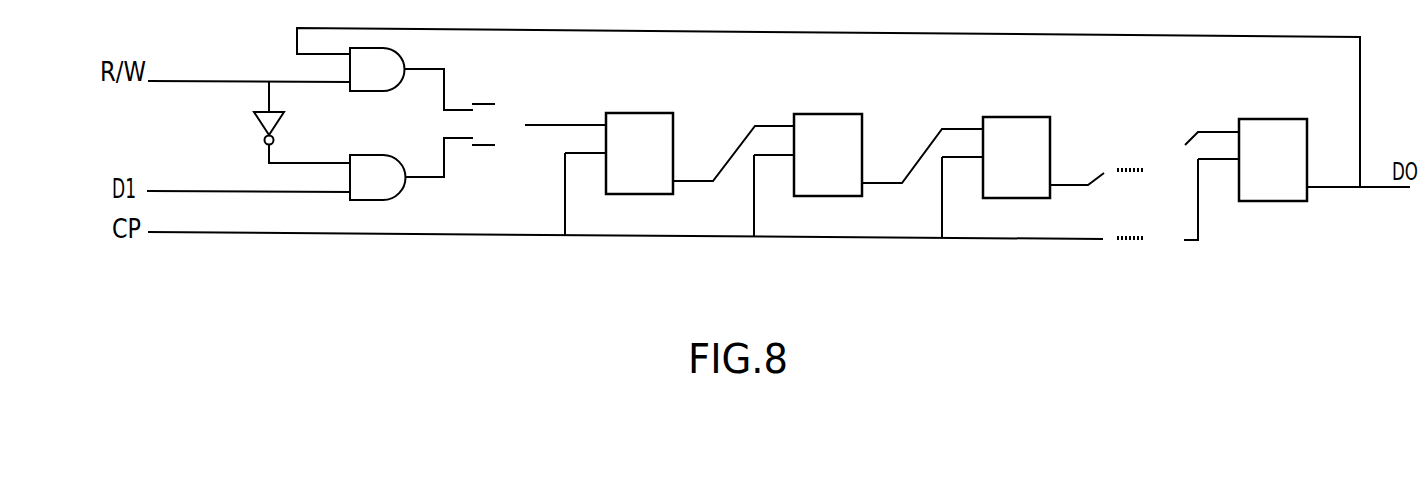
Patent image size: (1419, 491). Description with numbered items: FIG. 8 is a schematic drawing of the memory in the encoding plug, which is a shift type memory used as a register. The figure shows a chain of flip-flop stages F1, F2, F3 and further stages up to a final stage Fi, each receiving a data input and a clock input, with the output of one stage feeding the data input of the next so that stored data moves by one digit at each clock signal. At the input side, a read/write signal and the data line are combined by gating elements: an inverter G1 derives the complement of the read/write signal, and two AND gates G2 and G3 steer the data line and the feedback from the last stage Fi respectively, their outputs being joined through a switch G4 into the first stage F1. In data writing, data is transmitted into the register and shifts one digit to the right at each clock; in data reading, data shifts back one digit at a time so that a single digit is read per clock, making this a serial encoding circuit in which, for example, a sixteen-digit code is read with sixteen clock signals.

The inverter G1 is at (302, 122).
The AND gate G2 is at (411, 169).
The AND gate G3 is at (411, 71).
The switch G4 is at (475, 117).
The D flip-flop F1 is at (659, 169).
The D flip-flop F2 is at (868, 170).
The D flip-flop F3 is at (1023, 172).
The D flip-flop Fi is at (1245, 174).